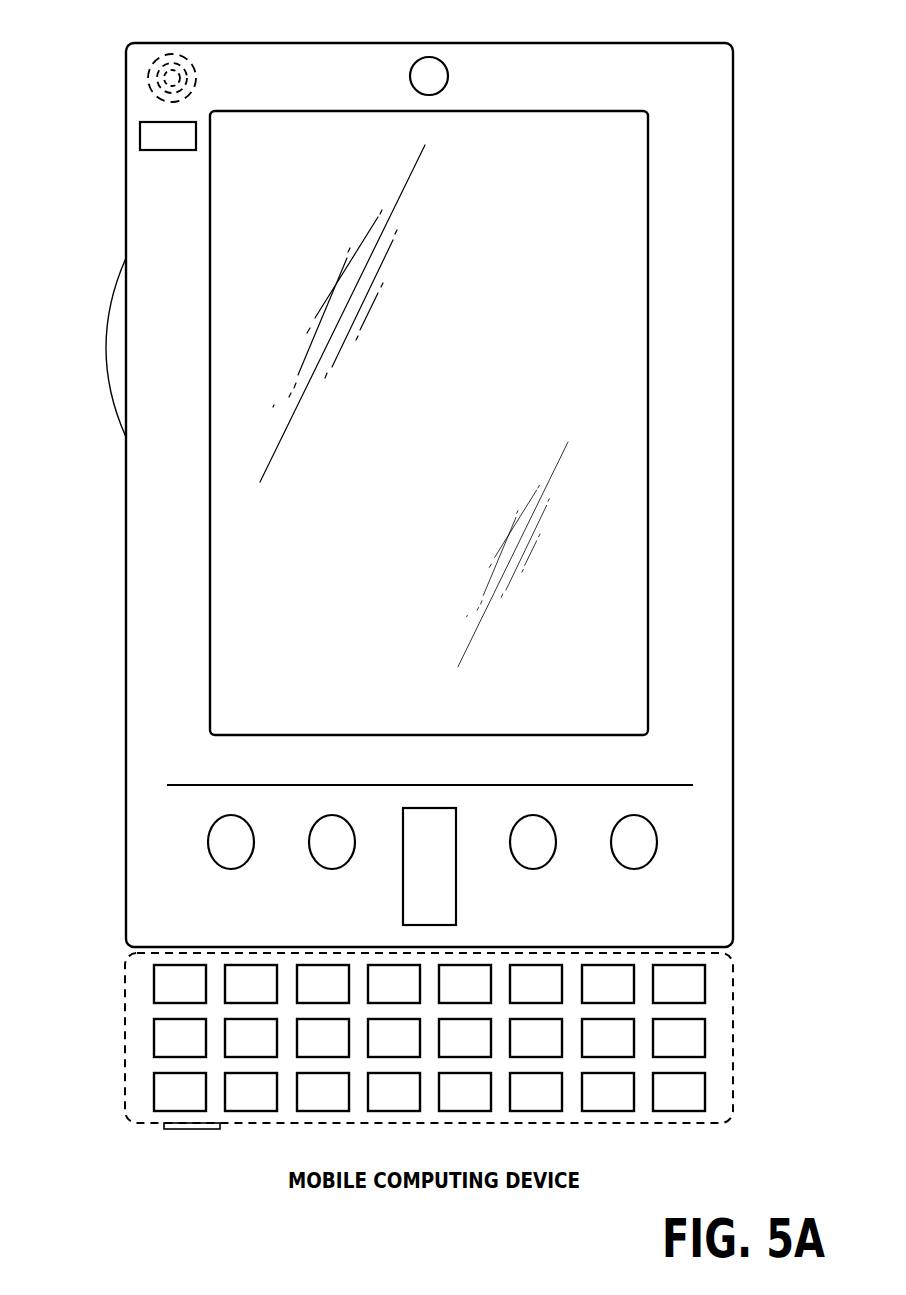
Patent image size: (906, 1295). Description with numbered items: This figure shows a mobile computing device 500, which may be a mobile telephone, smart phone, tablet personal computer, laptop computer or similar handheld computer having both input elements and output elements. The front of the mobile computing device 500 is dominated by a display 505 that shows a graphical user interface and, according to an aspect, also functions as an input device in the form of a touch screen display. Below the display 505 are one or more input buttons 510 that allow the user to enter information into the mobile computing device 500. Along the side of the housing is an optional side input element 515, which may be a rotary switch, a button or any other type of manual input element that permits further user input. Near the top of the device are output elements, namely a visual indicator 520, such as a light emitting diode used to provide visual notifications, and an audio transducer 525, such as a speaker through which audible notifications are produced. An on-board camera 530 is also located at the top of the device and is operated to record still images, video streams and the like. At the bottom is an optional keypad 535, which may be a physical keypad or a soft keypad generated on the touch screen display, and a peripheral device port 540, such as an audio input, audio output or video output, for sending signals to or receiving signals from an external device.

The mobile computing device 500 is at (716, 46).
The display 505 is at (232, 583).
The input buttons 510 is at (700, 900).
The side input element 515 is at (106, 350).
The visual indicator 520 is at (141, 134).
The audio transducer 525 is at (141, 80).
The on-board camera 530 is at (430, 57).
The keypad 535 is at (137, 1037).
The peripheral device port 540 is at (172, 1131).